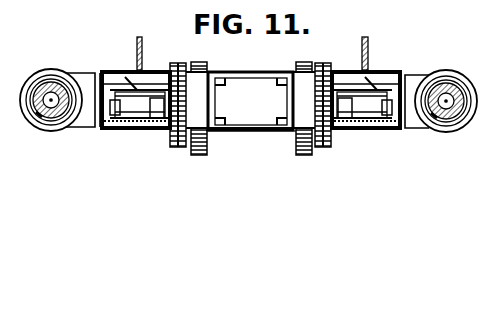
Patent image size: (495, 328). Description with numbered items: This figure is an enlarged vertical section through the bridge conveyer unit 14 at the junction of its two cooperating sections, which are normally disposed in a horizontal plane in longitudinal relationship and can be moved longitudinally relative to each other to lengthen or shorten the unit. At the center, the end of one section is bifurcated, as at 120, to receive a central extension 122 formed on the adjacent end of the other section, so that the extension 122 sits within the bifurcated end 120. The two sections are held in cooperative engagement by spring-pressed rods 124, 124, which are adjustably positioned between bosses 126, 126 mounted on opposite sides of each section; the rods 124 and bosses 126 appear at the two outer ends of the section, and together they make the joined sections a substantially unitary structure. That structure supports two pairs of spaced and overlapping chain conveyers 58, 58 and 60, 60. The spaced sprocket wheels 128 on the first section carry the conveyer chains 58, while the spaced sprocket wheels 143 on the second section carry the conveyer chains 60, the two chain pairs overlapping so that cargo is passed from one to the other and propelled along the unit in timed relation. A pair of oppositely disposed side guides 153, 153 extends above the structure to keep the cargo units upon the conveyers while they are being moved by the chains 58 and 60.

The bridge conveyer unit 14 is at (283, 64).
The conveyer chains 58 is at (178, 63).
The conveyer chains 60 is at (201, 154).
The bifurcated end 120 is at (165, 80).
The central extension 122 is at (250, 72).
The spring-pressed rods 124 is at (52, 115).
The bosses 126 is at (52, 69).
The sprocket wheels 128 is at (167, 83).
The sprocket wheels 143 is at (297, 135).
The side guides 153 is at (137, 47).